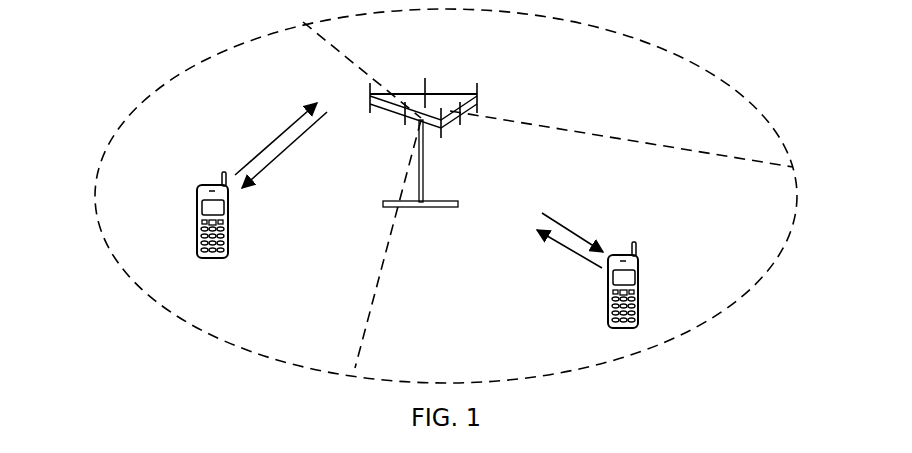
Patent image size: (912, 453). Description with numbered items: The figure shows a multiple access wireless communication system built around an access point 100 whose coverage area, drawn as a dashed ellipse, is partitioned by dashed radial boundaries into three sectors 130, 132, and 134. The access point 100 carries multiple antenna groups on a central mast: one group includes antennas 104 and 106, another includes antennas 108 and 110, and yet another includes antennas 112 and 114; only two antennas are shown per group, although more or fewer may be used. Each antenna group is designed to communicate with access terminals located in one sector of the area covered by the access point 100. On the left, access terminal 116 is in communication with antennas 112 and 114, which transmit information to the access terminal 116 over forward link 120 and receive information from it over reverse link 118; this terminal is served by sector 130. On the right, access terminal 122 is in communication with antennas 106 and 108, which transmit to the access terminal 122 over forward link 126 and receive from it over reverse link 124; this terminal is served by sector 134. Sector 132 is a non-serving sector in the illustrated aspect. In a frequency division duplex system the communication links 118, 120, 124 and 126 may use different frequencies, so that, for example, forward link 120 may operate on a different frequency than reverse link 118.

The access point 100 is at (421, 207).
The antenna 104 is at (441, 135).
The antenna 106 is at (460, 122).
The antenna 108 is at (477, 100).
The antenna 110 is at (425, 80).
The antenna 112 is at (370, 90).
The antenna 114 is at (405, 120).
The access terminal 116 is at (197, 203).
The reverse link 118 is at (277, 133).
The forward link 120 is at (287, 147).
The access terminal 122 is at (638, 280).
The reverse link 124 is at (577, 255).
The forward link 126 is at (572, 232).
The sector 130 is at (213, 50).
The sector 132 is at (640, 32).
The sector 134 is at (675, 148).